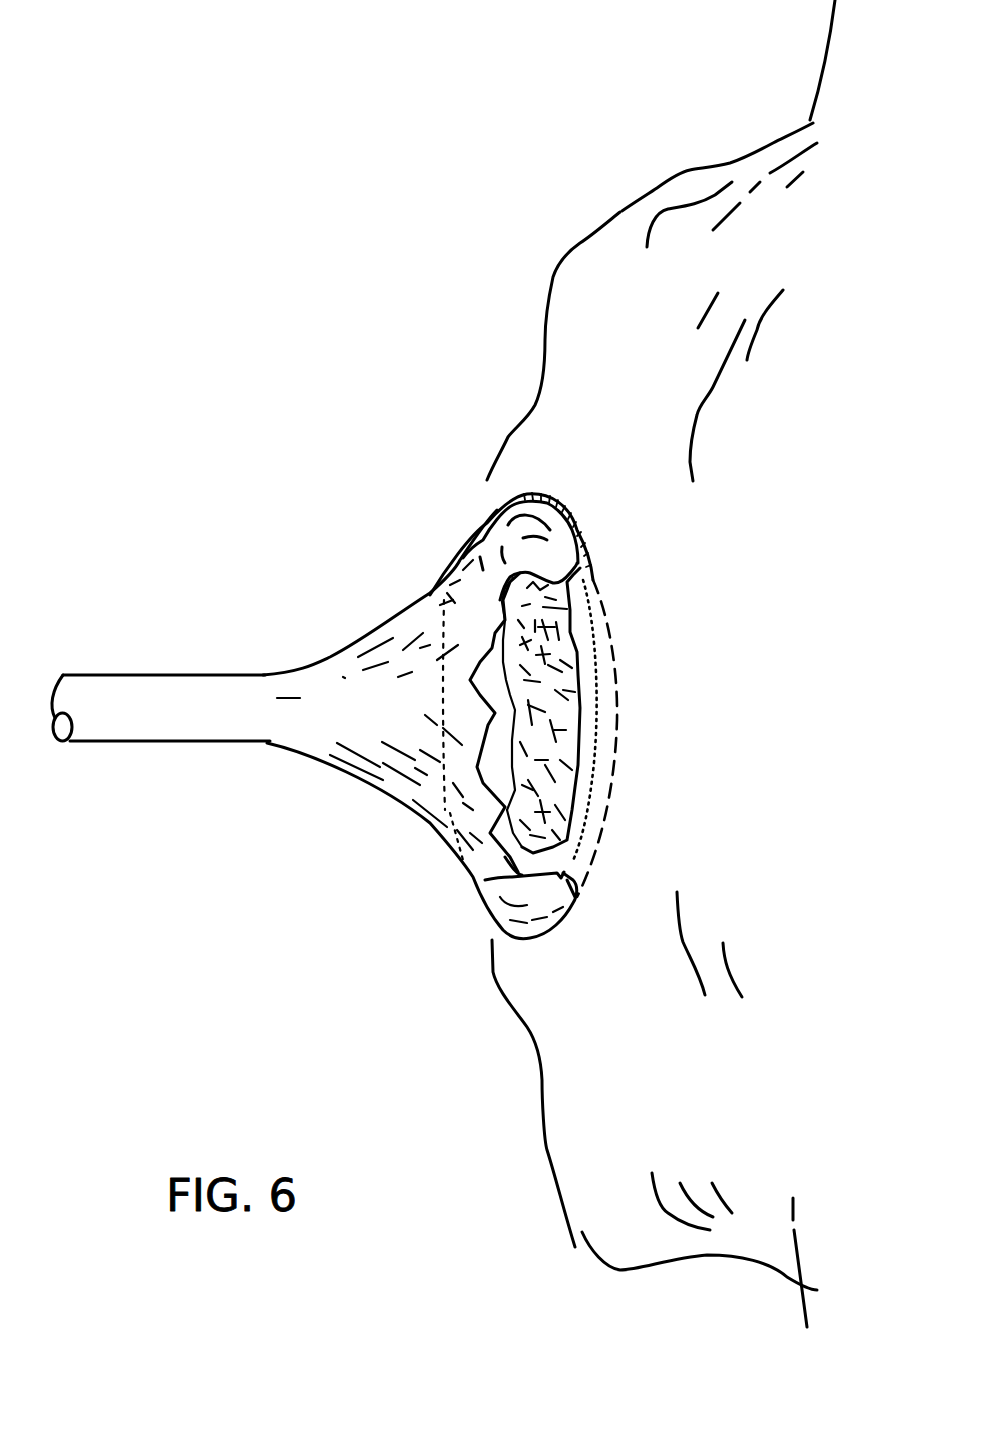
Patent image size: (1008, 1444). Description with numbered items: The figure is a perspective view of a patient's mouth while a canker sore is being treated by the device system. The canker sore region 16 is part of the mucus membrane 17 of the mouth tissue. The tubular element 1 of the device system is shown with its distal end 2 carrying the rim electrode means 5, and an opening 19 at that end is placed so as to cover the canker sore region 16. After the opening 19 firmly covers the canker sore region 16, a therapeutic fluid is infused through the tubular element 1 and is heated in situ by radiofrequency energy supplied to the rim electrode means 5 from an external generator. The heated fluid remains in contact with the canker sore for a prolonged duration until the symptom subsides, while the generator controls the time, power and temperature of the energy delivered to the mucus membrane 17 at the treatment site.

The tubular element 1 is at (172, 670).
The distal end 2 is at (523, 490).
The rim electrode means 5 is at (578, 510).
The canker sore region 16 is at (567, 633).
The mucus membrane 17 is at (613, 247).
The opening 19 is at (523, 867).